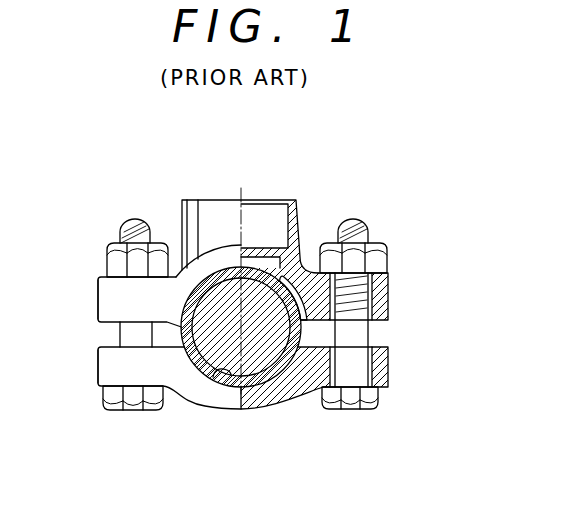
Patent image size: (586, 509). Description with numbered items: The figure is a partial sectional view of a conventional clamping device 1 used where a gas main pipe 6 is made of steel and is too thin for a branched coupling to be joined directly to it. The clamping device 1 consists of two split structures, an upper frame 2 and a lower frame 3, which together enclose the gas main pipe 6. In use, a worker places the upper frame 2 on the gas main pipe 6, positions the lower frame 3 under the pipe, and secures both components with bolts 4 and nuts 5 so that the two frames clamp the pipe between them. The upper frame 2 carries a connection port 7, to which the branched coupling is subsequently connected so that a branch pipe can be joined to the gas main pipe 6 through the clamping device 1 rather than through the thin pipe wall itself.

The clamping device 1 is at (322, 189).
The upper frame 2 is at (107, 299).
The lower frame 3 is at (107, 366).
The bolts 4 is at (112, 395).
The nuts 5 is at (113, 261).
The gas main pipe 6 is at (233, 386).
The connection port 7 is at (262, 220).